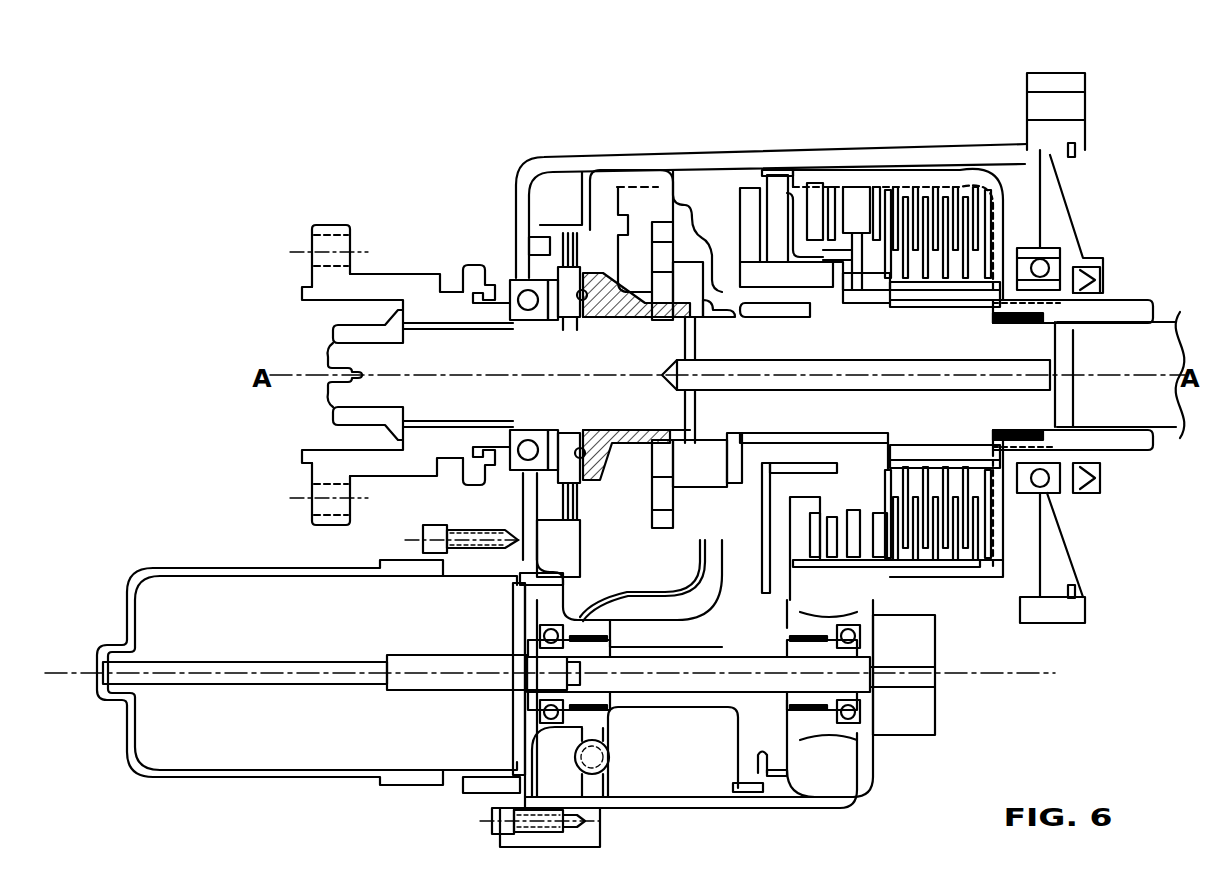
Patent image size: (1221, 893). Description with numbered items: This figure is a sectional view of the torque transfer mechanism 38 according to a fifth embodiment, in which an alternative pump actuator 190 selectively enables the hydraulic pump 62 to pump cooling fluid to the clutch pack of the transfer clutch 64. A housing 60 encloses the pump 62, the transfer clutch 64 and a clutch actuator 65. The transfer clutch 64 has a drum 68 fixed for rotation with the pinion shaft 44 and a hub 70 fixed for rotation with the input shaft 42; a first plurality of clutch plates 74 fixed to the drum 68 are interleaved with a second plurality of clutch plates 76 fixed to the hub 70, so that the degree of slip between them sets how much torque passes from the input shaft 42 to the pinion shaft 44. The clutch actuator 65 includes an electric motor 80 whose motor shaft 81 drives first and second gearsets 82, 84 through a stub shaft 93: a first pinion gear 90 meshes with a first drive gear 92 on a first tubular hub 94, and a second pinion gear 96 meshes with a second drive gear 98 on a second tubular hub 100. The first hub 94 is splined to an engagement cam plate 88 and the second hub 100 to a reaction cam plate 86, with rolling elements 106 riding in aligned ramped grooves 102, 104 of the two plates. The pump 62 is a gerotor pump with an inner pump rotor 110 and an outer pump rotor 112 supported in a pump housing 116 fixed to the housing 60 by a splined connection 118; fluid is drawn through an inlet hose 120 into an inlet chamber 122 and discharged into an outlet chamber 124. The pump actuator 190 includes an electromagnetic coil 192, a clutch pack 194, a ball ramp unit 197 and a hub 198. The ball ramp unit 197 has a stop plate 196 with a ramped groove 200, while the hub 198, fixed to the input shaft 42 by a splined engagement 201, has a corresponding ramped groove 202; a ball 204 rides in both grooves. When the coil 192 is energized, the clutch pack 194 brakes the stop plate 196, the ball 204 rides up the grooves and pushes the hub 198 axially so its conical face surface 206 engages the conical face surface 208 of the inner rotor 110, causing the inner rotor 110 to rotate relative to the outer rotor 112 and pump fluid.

The torque transfer mechanism 38 is at (1073, 673).
The input shaft 42 is at (337, 353).
The pinion shaft 44 is at (1153, 337).
The housing 60 is at (1003, 143).
The hydraulic pump 62 is at (673, 232).
The transfer clutch 64 is at (866, 220).
The clutch actuator 65 is at (625, 767).
The drum 68 is at (1003, 193).
The hub 70 is at (985, 460).
The first plurality of clutch plates 74 is at (967, 163).
The second plurality of clutch plates 76 is at (980, 473).
The electric motor 80 is at (332, 780).
The motor shaft 81 is at (440, 665).
The first gearset 82 is at (735, 562).
The second gearset 84 is at (792, 578).
The reaction cam plate 86 is at (858, 213).
The engagement cam plate 88 is at (927, 160).
The first pinion gear 90 is at (748, 790).
The first drive gear 92 is at (750, 245).
The stub shaft 93 is at (690, 690).
The first tubular hub 94 is at (830, 297).
The second pinion gear 96 is at (780, 777).
The second drive gear 98 is at (772, 173).
The second tubular hub 100 is at (845, 273).
The ramped grooves 102 is at (852, 213).
The ramped grooves 104 is at (923, 193).
The rolling elements 106 is at (862, 217).
The inner pump rotor 110 is at (662, 457).
The outer pump rotor 112 is at (663, 222).
The pump housing 116 is at (713, 447).
The splined connection 118 is at (635, 288).
The inlet hose 120 is at (623, 602).
The inlet chamber 122 is at (683, 480).
The outlet chamber 124 is at (743, 310).
The pump actuator 190 is at (587, 228).
The electromagnetic coil 192 is at (528, 245).
The clutch pack 194 is at (555, 224).
The stop plate 196 is at (563, 277).
The ball ramp unit 197 is at (593, 477).
The hub 198 is at (592, 317).
The ramped groove 200 is at (570, 300).
The splined engagement 201 is at (612, 428).
The ramped groove 202 is at (600, 320).
The ball 204 is at (582, 300).
The conical face surface 206 is at (673, 307).
The conical face surface 208 is at (642, 300).